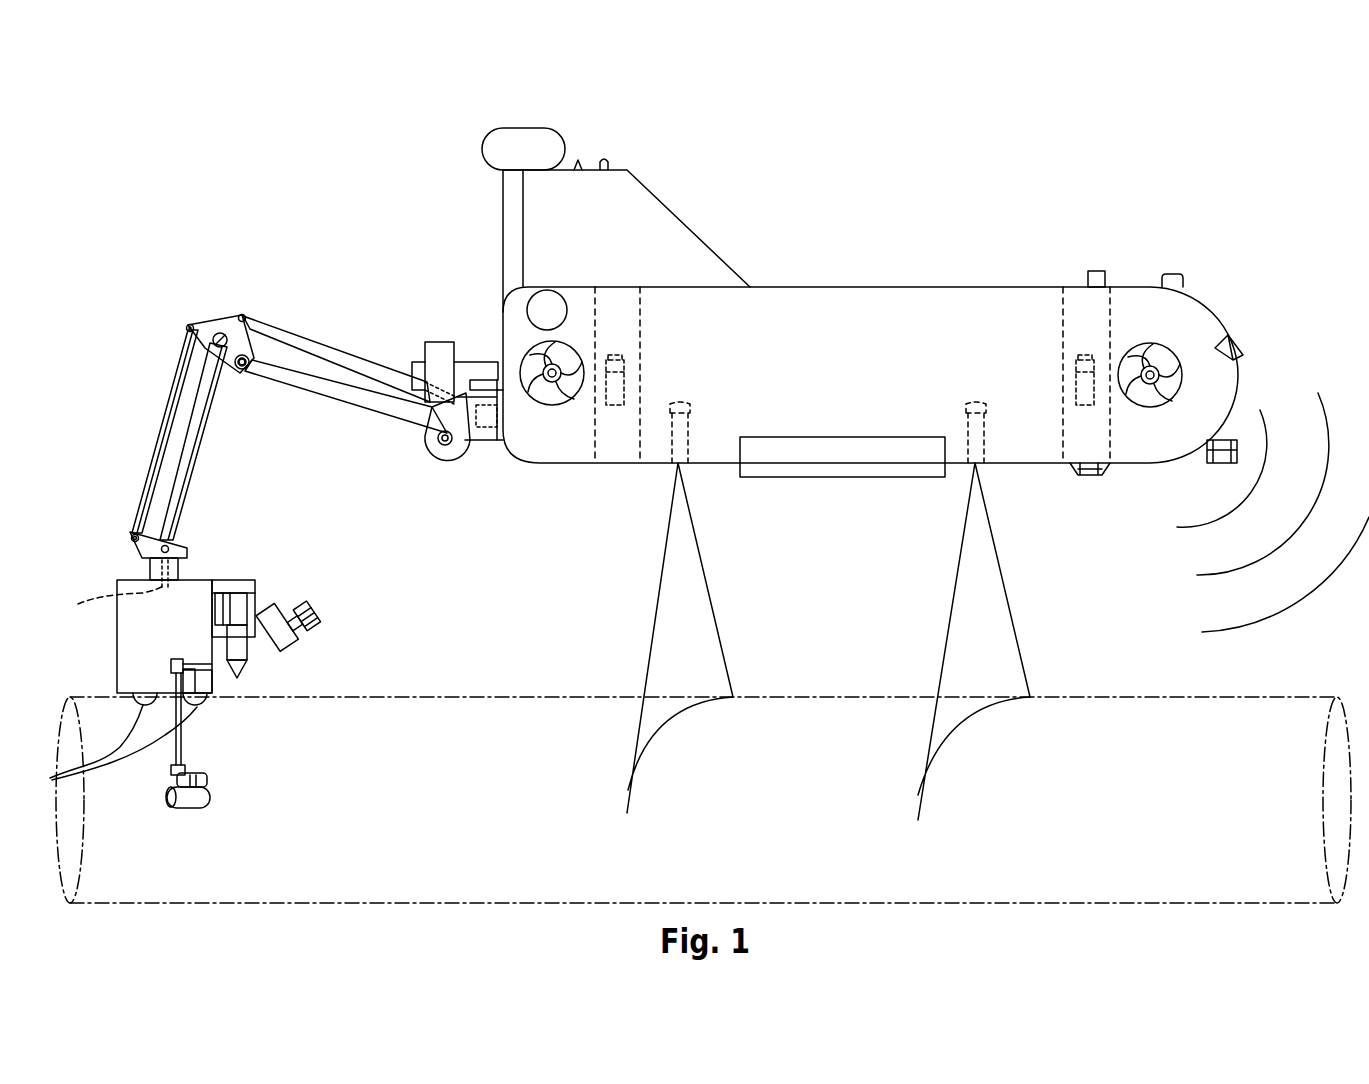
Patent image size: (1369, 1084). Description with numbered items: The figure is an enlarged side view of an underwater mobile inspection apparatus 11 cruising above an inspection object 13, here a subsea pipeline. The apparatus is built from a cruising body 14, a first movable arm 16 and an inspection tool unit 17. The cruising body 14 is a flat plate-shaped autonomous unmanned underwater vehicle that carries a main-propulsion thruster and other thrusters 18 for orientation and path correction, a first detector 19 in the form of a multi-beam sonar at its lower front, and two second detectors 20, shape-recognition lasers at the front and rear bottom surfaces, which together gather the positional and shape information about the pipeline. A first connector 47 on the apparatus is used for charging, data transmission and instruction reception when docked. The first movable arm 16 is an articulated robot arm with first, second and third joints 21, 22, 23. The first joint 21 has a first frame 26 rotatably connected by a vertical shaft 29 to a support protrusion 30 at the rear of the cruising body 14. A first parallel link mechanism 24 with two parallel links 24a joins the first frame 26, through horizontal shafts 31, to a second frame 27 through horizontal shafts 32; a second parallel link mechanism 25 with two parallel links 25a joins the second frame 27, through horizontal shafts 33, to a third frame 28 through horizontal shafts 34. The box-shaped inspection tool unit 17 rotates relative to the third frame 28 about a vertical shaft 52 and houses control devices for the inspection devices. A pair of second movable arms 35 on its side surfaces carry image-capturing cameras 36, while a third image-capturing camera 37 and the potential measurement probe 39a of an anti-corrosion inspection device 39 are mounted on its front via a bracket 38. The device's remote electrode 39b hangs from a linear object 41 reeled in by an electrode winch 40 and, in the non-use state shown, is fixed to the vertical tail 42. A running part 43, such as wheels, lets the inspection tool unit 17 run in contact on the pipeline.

The underwater mobile inspection apparatus 11 is at (583, 66).
The inspection object 13 is at (1110, 695).
The cruising body 14 is at (945, 286).
The first movable arm 16 is at (190, 303).
The inspection tool unit 17 is at (117, 620).
The thruster 18 is at (563, 358).
The first detector 19 is at (1237, 442).
The second detector 20 is at (680, 463).
The first joint 21 is at (435, 485).
The second joint 22 is at (221, 295).
The third joint 23 is at (86, 560).
The first parallel link mechanism 24 is at (345, 316).
The parallel link 24a is at (313, 336).
The second parallel link mechanism 25 is at (130, 426).
The parallel link 25a is at (153, 468).
The first frame 26 is at (446, 447).
The second frame 27 is at (222, 332).
The third frame 28 is at (148, 546).
The vertical shaft 29 is at (490, 442).
The support protrusion 30 is at (448, 342).
The horizontal shaft 31 is at (443, 438).
The horizontal shaft 32 is at (242, 370).
The horizontal shaft 33 is at (216, 345).
The horizontal shaft 34 is at (168, 549).
The second movable arm 35 is at (182, 753).
The image-capturing camera 36 is at (210, 797).
The third image-capturing camera 37 is at (300, 638).
The bracket 38 is at (258, 590).
The anti-corrosion inspection device 39 is at (368, 707).
The potential measurement probe 39a is at (252, 664).
The remote electrode 39b is at (556, 138).
The electrode winch 40 is at (557, 302).
The linear object 41 is at (505, 202).
The vertical tail 42 is at (635, 195).
The running part 43 is at (109, 750).
The first connector 47 is at (825, 478).
The vertical shaft 52 is at (108, 602).